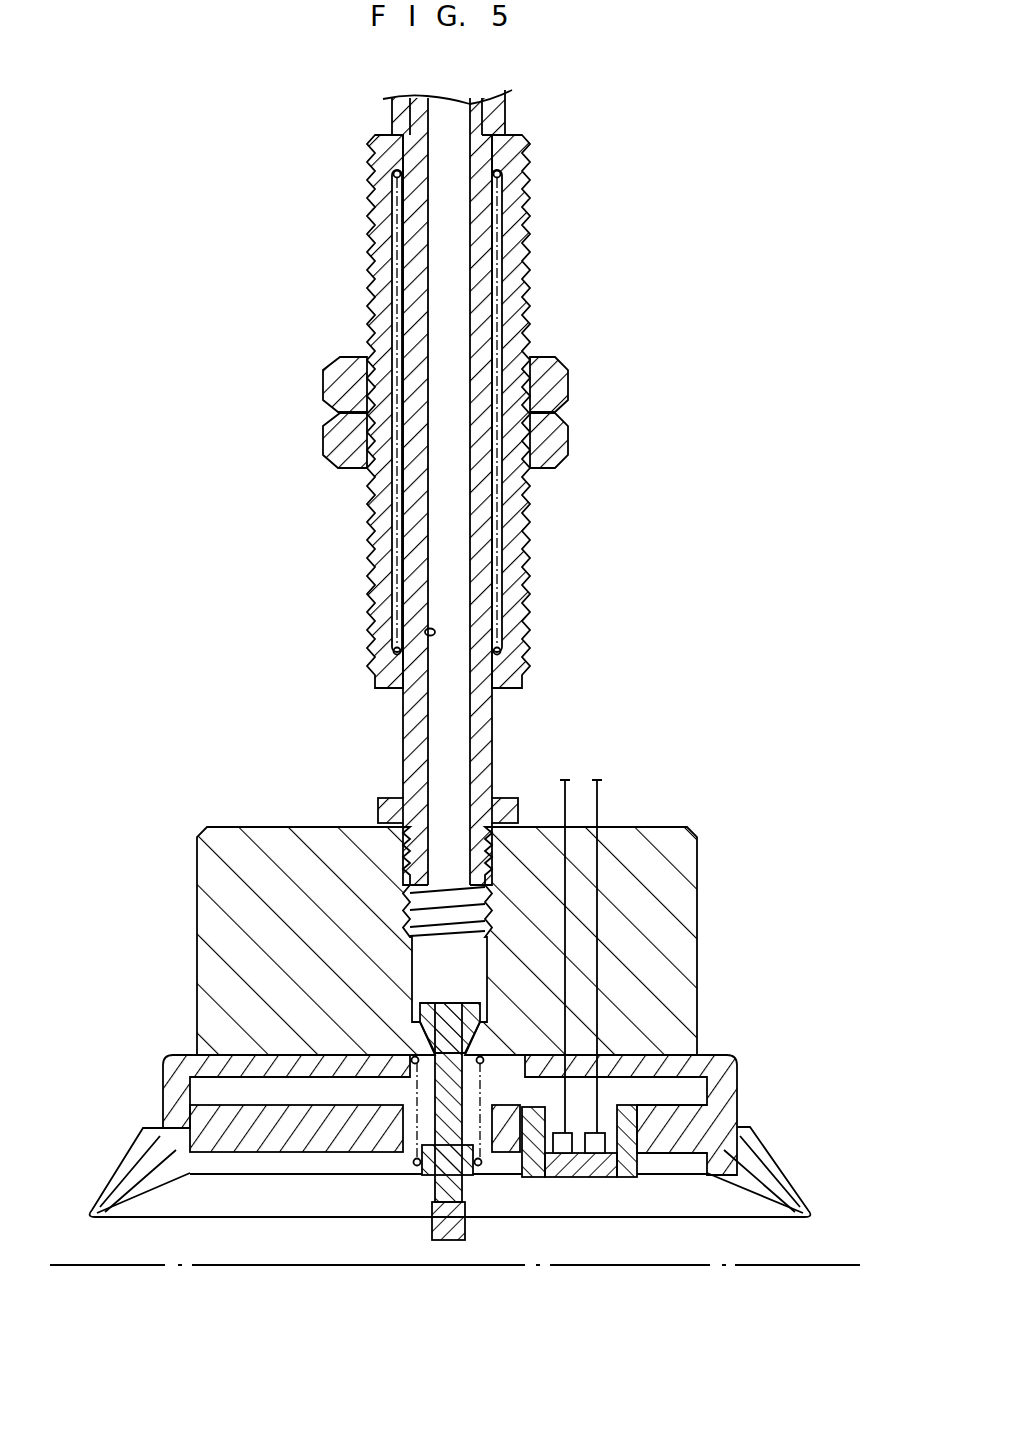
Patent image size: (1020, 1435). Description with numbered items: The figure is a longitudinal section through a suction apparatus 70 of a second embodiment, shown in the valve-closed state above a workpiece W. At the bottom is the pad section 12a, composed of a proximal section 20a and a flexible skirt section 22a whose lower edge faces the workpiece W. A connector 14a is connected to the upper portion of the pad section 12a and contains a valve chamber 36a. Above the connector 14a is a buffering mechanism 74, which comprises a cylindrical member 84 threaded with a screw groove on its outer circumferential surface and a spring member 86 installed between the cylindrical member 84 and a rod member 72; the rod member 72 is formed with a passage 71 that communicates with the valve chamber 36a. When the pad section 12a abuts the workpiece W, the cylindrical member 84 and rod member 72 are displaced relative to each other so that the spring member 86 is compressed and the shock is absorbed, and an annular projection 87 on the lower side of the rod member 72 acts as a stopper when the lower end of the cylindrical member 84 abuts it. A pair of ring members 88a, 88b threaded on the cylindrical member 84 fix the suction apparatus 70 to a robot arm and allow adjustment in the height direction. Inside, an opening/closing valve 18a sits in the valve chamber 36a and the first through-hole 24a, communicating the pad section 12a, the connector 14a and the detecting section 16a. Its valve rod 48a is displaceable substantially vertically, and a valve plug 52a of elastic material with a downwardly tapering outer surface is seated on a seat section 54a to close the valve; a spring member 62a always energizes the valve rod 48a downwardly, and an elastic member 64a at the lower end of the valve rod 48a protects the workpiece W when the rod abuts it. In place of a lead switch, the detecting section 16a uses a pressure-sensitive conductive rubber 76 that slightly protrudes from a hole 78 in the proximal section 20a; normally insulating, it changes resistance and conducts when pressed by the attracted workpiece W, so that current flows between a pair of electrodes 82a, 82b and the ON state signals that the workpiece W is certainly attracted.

The suction apparatus 70 is at (633, 85).
The buffering mechanism 74 is at (529, 216).
The rod member 72 is at (480, 295).
The ring member 88a is at (572, 392).
The ring member 88b is at (572, 456).
The cylindrical member 84 is at (512, 553).
The spring member 86 is at (506, 650).
The passage 71 is at (425, 633).
The annular projection 87 is at (521, 803).
The connector 14a is at (698, 886).
The valve chamber 36a is at (429, 984).
The seat section 54a is at (420, 1040).
The valve plug 52a is at (470, 1037).
The detecting section 16a is at (701, 1056).
The hole 78 is at (634, 1104).
The pad section 12a is at (761, 1134).
The opening/closing valve 18a is at (460, 1103).
The proximal section 20a is at (245, 1130).
The skirt section 22a is at (107, 1195).
The valve rod 48a is at (398, 1153).
The spring member 62a is at (414, 1160).
The elastic member 64a is at (452, 1242).
The first through-hole 24a is at (487, 1156).
The electrode 82a is at (567, 1155).
The electrode 82b is at (598, 1150).
The pressure-sensitive conductive rubber 76 is at (710, 1177).
The workpiece W is at (832, 1262).